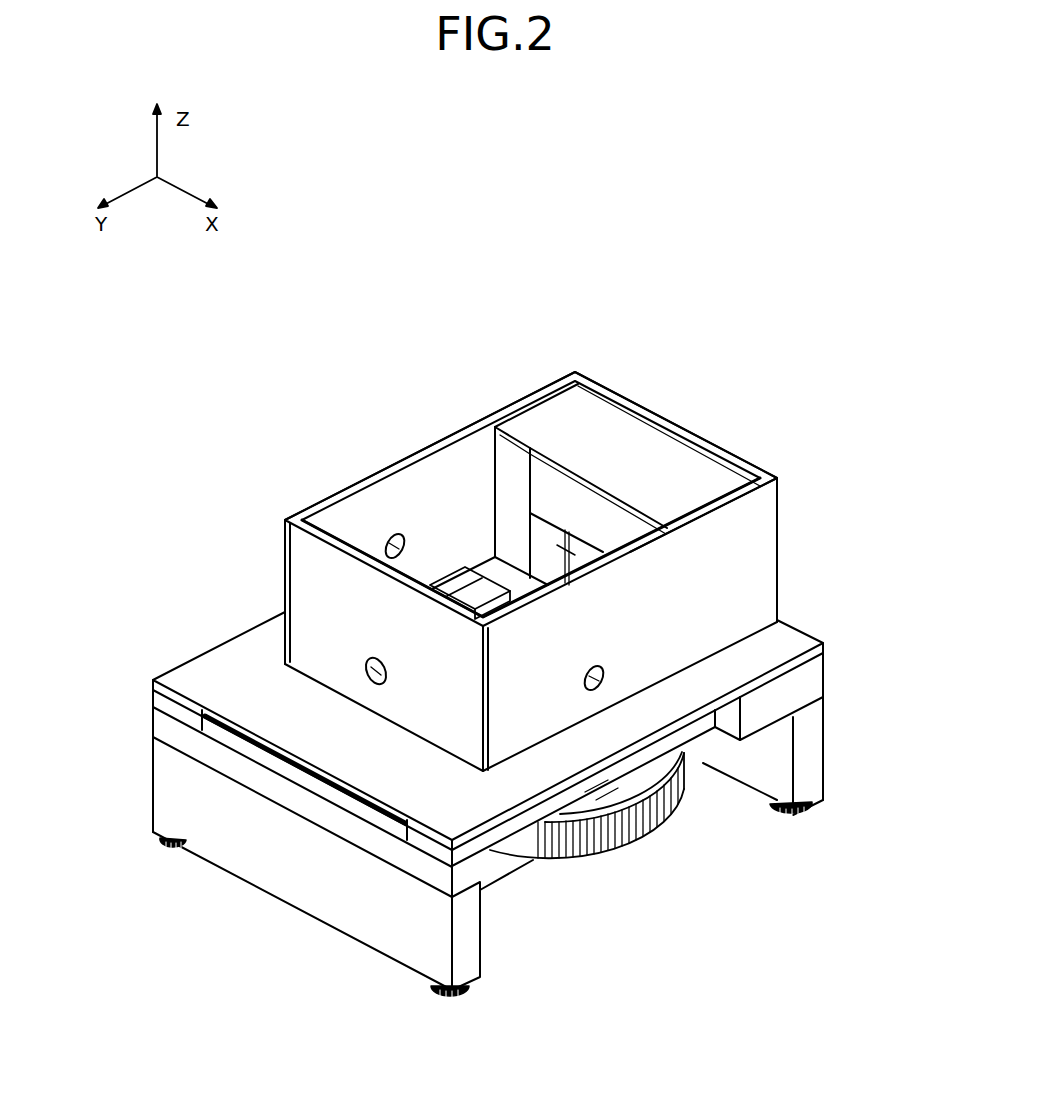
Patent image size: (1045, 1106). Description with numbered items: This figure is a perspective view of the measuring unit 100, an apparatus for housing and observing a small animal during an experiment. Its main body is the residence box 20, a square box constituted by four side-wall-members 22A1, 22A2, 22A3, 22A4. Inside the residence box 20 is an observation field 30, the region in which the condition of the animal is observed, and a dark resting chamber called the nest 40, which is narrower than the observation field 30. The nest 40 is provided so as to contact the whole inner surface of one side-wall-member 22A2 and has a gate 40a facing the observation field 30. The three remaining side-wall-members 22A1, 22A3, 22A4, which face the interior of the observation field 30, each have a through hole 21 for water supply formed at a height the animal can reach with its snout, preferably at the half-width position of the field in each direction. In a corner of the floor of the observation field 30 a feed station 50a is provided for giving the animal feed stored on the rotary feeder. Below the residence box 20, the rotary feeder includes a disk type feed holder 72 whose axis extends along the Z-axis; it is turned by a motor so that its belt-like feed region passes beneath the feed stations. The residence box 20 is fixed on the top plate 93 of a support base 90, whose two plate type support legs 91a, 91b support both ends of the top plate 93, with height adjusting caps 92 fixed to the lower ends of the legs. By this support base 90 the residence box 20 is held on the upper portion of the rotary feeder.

The measuring unit 100 is at (280, 354).
The residence box 20 is at (386, 423).
The through hole for water supply 21 is at (387, 540).
The side-wall-member 22A1 is at (533, 388).
The side-wall-member 22A2 is at (601, 386).
The side-wall-member 22A3 is at (754, 496).
The side-wall-member 22A4 is at (284, 524).
The observation field 30 is at (376, 490).
The nest 40 is at (712, 466).
The gate 40a is at (585, 562).
The feed station 50a is at (481, 590).
The disk type feed holder 72 is at (594, 843).
The support base 90 is at (127, 770).
The plate type support leg 91a is at (815, 759).
The plate type support leg 91b is at (303, 904).
The height adjusting cap 92 is at (178, 857).
The top plate 93 is at (200, 662).